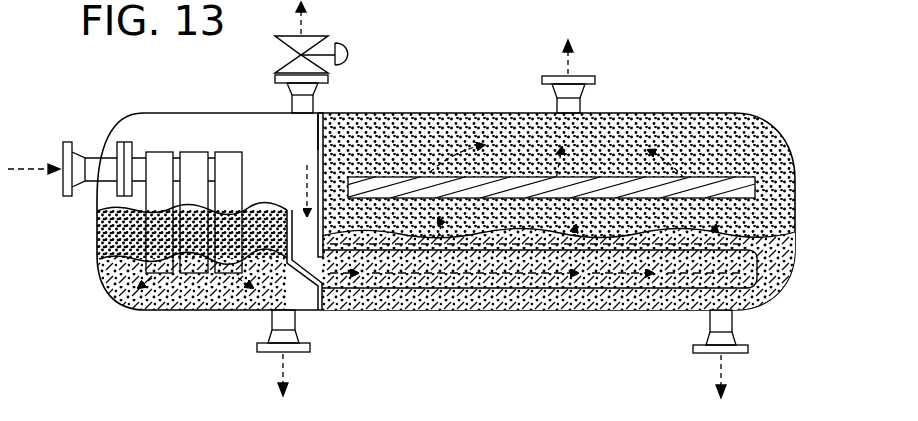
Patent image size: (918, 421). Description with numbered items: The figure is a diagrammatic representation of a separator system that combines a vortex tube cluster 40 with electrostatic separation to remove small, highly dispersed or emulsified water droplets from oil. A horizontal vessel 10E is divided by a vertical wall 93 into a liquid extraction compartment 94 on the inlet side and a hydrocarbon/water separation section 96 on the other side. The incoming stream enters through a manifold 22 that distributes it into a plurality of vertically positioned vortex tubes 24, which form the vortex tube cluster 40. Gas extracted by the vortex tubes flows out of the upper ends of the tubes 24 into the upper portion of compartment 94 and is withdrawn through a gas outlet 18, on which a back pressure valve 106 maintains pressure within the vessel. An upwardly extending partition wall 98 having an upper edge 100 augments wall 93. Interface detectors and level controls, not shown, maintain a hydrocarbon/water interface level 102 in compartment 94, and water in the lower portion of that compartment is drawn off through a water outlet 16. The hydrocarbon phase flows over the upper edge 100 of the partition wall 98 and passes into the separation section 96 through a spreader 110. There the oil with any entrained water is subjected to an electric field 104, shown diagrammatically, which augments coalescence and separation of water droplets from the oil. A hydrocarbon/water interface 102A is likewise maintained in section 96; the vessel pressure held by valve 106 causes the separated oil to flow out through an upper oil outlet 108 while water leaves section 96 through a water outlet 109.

The vessel 10E is at (440, 113).
The manifold 22 is at (68, 141).
The vortex tubes 24 is at (200, 156).
The liquid extraction compartment 94 is at (203, 166).
The vortex tube cluster 40 is at (252, 161).
The hydrocarbon/water interface level 102 is at (127, 260).
The partition wall 98 is at (289, 236).
The upper edge 100 is at (323, 164).
The vertical wall 93 is at (322, 150).
The gas outlet 18 is at (313, 90).
The back pressure valve 106 is at (312, 36).
The upper oil outlet 108 is at (573, 88).
The electric field 104 is at (597, 180).
The hydrocarbon/water separation section 96 is at (738, 147).
The hydrocarbon/water interface 102A is at (780, 226).
The spreader 110 is at (750, 290).
The water outlet 109 is at (710, 333).
The water outlet 16 is at (277, 338).